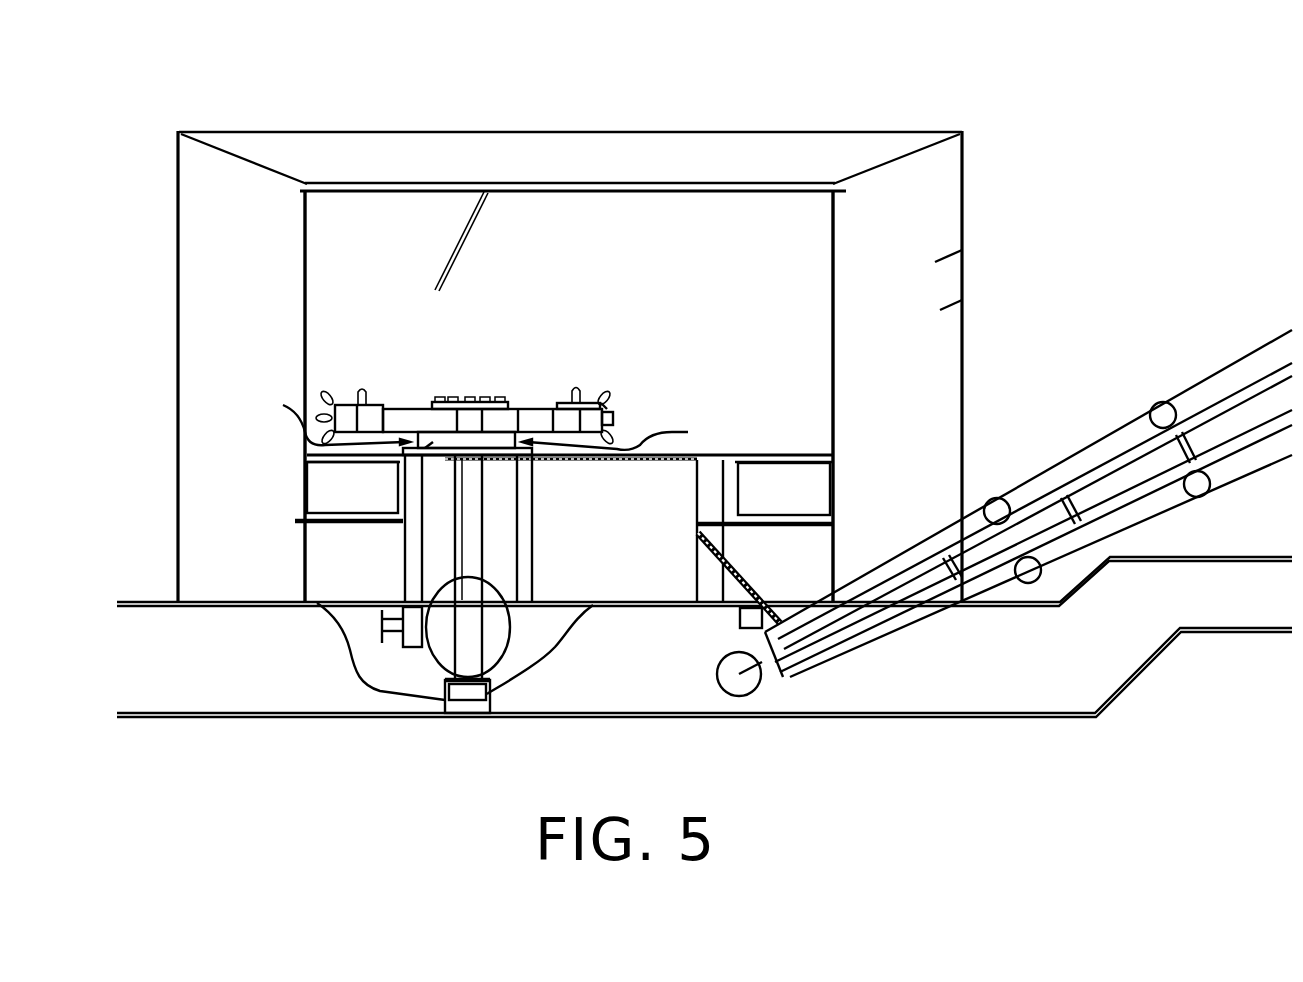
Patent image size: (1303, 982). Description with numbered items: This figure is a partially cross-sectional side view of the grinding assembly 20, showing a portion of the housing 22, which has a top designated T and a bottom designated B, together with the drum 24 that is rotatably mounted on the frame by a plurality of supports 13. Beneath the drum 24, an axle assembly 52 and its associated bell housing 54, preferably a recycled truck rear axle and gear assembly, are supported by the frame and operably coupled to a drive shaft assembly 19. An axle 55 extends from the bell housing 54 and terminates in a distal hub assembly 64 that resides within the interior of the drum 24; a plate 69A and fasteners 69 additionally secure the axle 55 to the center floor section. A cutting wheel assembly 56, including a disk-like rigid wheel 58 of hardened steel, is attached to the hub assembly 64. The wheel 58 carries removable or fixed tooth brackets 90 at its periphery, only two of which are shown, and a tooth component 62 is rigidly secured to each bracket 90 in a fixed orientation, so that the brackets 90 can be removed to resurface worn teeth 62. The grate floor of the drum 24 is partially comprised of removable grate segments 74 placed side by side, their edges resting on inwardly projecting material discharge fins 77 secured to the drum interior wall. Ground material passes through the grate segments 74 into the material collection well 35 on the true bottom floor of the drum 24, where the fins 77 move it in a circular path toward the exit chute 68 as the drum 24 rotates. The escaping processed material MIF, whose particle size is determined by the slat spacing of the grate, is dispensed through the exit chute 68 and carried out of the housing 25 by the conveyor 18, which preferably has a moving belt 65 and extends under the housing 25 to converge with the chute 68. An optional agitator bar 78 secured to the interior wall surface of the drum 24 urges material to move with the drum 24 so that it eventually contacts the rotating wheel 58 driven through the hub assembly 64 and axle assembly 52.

The top T is at (388, 130).
The processed material MIF is at (742, 252).
The grinding assembly 20 is at (935, 128).
The housing 22 is at (962, 352).
The drum 24 is at (833, 314).
The housing 25 is at (910, 326).
The conveyor 18 is at (1151, 406).
The supports 13 is at (412, 537).
The drive shaft assembly 19 is at (378, 627).
The bottom B is at (247, 603).
The material collection well 35 is at (305, 463).
The axle assembly 52 is at (485, 507).
The bell housing 54 is at (495, 655).
The axle 55 is at (468, 542).
The cutting wheel assembly 56 is at (398, 407).
The wheel 58 is at (520, 417).
The tooth component 62 is at (625, 414).
The hub assembly 64 is at (474, 390).
The moving belt 65 is at (932, 535).
The exit chute 68 is at (716, 556).
The fasteners 69 is at (283, 405).
The plate 69A is at (432, 441).
The grate segments 74 is at (306, 452).
The material discharge fin 77 is at (803, 495).
The agitator bar 78 is at (472, 232).
The tooth brackets 90 is at (592, 398).